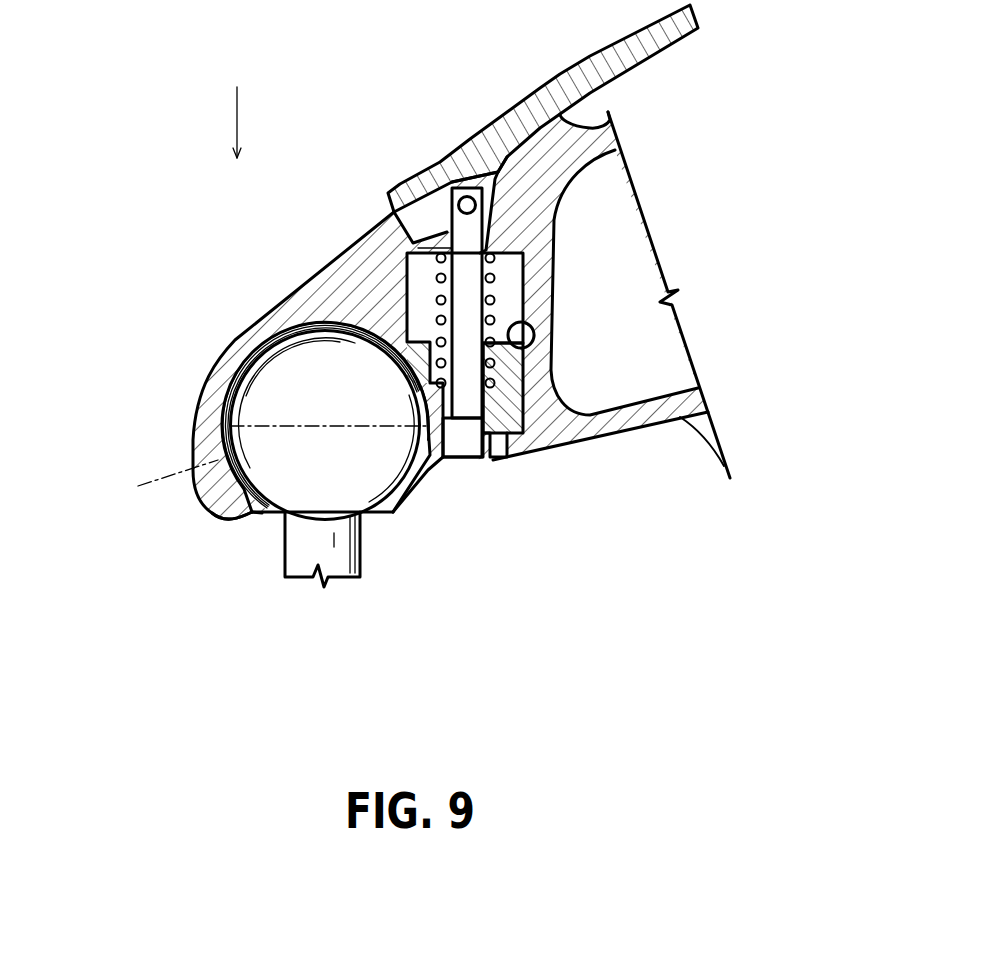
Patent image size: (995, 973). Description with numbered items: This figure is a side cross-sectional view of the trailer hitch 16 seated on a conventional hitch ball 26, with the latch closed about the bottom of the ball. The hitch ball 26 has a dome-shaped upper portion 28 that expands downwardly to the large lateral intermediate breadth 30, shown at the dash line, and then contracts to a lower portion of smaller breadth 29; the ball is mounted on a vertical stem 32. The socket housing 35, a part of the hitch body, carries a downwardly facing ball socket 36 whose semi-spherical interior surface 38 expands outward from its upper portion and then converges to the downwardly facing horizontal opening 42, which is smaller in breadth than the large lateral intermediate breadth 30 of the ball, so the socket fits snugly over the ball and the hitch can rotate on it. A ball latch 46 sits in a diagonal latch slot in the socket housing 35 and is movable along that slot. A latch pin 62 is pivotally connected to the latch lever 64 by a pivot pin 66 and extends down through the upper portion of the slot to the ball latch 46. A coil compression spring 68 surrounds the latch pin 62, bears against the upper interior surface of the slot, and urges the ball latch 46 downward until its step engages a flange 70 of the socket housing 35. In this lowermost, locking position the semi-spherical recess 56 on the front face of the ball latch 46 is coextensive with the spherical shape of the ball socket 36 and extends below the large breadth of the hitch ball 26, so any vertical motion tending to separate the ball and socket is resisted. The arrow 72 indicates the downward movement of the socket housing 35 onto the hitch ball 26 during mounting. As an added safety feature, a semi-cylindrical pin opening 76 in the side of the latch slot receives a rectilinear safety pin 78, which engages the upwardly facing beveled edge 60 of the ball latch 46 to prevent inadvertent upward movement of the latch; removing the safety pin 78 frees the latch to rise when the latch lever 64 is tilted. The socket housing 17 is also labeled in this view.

The trailer hitch 16 is at (276, 255).
The housing 17 is at (333, 256).
The hitch ball 26 is at (390, 472).
The dome-shaped upper portion 28 is at (322, 400).
The smaller breadth 29 is at (322, 474).
The large lateral intermediate breadth 30 is at (160, 473).
The vertical stem 32 is at (305, 558).
The socket housing 35 is at (207, 368).
The ball socket 36 is at (262, 513).
The semi-spherical interior surface 38 is at (222, 416).
The horizontal opening 42 is at (258, 517).
The ball latch 46 is at (513, 287).
The semi-spherical recess 56 is at (430, 425).
The beveled edge 60 is at (549, 368).
The latch pin 62 is at (480, 250).
The latch lever 64 is at (590, 58).
The pivot pin 66 is at (462, 196).
The coil compression spring 68 is at (437, 258).
The flange 70 is at (503, 450).
The arrow 72 is at (237, 129).
The semi-cylindrical pin opening 76 is at (540, 339).
The rectilinear safety pin 78 is at (533, 322).